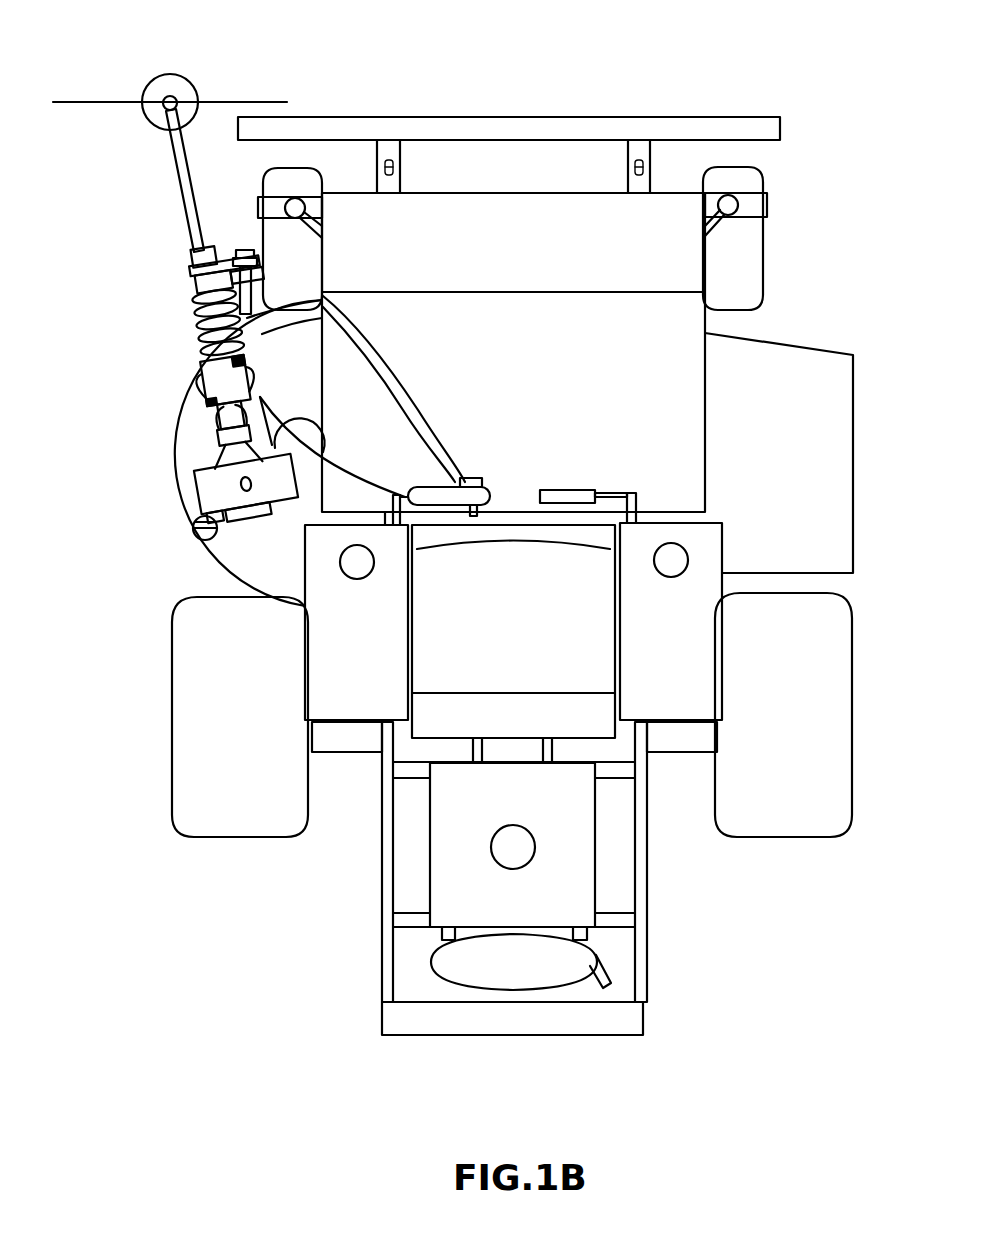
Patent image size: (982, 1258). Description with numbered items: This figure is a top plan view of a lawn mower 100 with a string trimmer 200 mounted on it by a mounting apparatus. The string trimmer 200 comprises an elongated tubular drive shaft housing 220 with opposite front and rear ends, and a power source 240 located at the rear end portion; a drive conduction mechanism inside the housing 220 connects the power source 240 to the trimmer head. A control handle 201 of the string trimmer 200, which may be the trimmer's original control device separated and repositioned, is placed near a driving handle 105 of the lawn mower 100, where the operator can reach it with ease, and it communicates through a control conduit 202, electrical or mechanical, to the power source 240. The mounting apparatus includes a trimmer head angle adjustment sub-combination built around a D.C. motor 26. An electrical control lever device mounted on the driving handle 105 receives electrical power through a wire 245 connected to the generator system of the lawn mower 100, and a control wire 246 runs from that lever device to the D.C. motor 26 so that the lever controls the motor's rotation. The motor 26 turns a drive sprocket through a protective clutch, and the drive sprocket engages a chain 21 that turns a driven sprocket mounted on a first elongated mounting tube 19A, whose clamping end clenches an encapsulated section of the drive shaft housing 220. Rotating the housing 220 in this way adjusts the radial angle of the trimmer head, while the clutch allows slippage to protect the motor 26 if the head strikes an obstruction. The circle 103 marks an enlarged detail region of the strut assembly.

The lawn mower 100 is at (510, 357).
The string trimmer 200 is at (148, 63).
The elongated tubular drive shaft housing 220 is at (192, 222).
The first elongated mounting tube 19A is at (195, 258).
The chain 21 is at (229, 253).
The D.C. motor 26 is at (243, 317).
The wire 245 is at (367, 345).
The control wire 246 is at (403, 411).
The control conduit 202 is at (333, 457).
The control handle 201 is at (470, 495).
The driving handle 105 is at (392, 498).
The power source 240 is at (210, 489).
The detail circle 103 is at (223, 545).